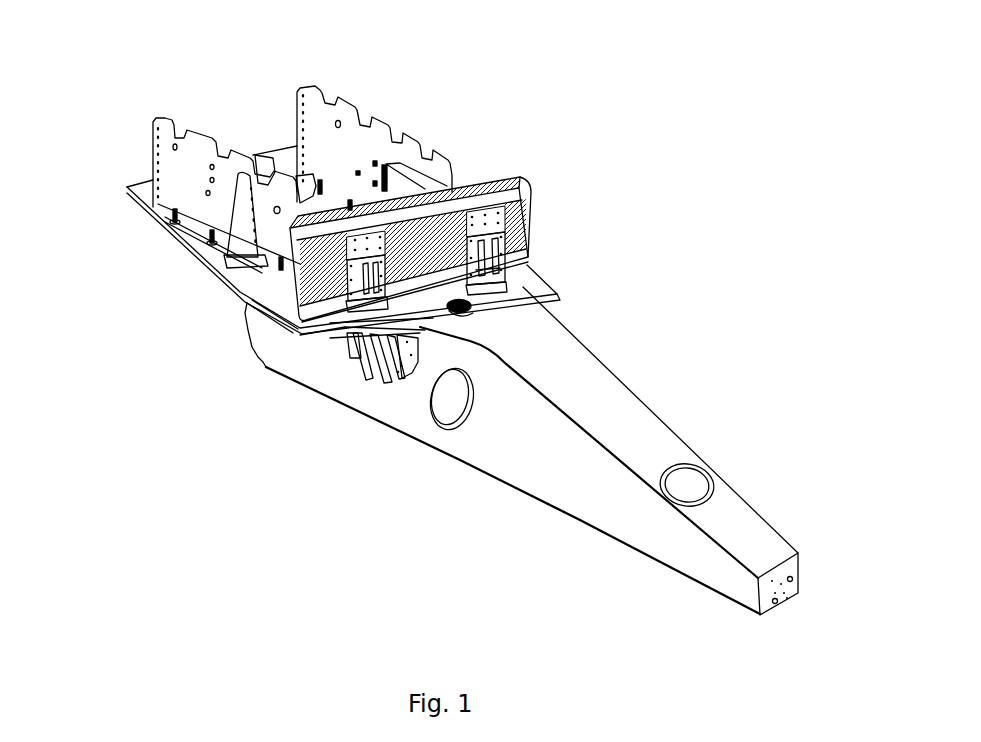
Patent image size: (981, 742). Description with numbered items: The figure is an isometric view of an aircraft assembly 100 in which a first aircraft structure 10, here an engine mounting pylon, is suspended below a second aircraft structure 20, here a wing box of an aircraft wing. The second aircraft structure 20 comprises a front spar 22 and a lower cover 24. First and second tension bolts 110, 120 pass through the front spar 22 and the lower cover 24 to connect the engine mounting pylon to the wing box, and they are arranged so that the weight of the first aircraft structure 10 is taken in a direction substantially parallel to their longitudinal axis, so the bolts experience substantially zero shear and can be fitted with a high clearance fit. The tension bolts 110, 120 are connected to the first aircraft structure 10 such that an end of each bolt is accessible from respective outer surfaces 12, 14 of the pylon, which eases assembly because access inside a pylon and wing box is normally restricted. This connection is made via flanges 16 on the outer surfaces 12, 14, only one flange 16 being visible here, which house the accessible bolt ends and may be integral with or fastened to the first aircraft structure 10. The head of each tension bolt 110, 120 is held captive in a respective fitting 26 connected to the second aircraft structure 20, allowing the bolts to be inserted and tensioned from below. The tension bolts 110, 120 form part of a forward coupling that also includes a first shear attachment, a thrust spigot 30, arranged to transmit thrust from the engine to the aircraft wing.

The first aircraft structure 10 is at (546, 534).
The outer surface 12 is at (493, 458).
The outer surface 14 is at (667, 438).
The flange 16 is at (373, 370).
The second aircraft structure 20 is at (480, 162).
The front spar 22 is at (530, 203).
The lower cover 24 is at (137, 210).
The fitting 26 is at (505, 242).
The thrust spigot 30 is at (476, 307).
The aircraft assembly 100 is at (248, 101).
The first tension bolt 110 is at (353, 288).
The second tension bolt 120 is at (492, 273).